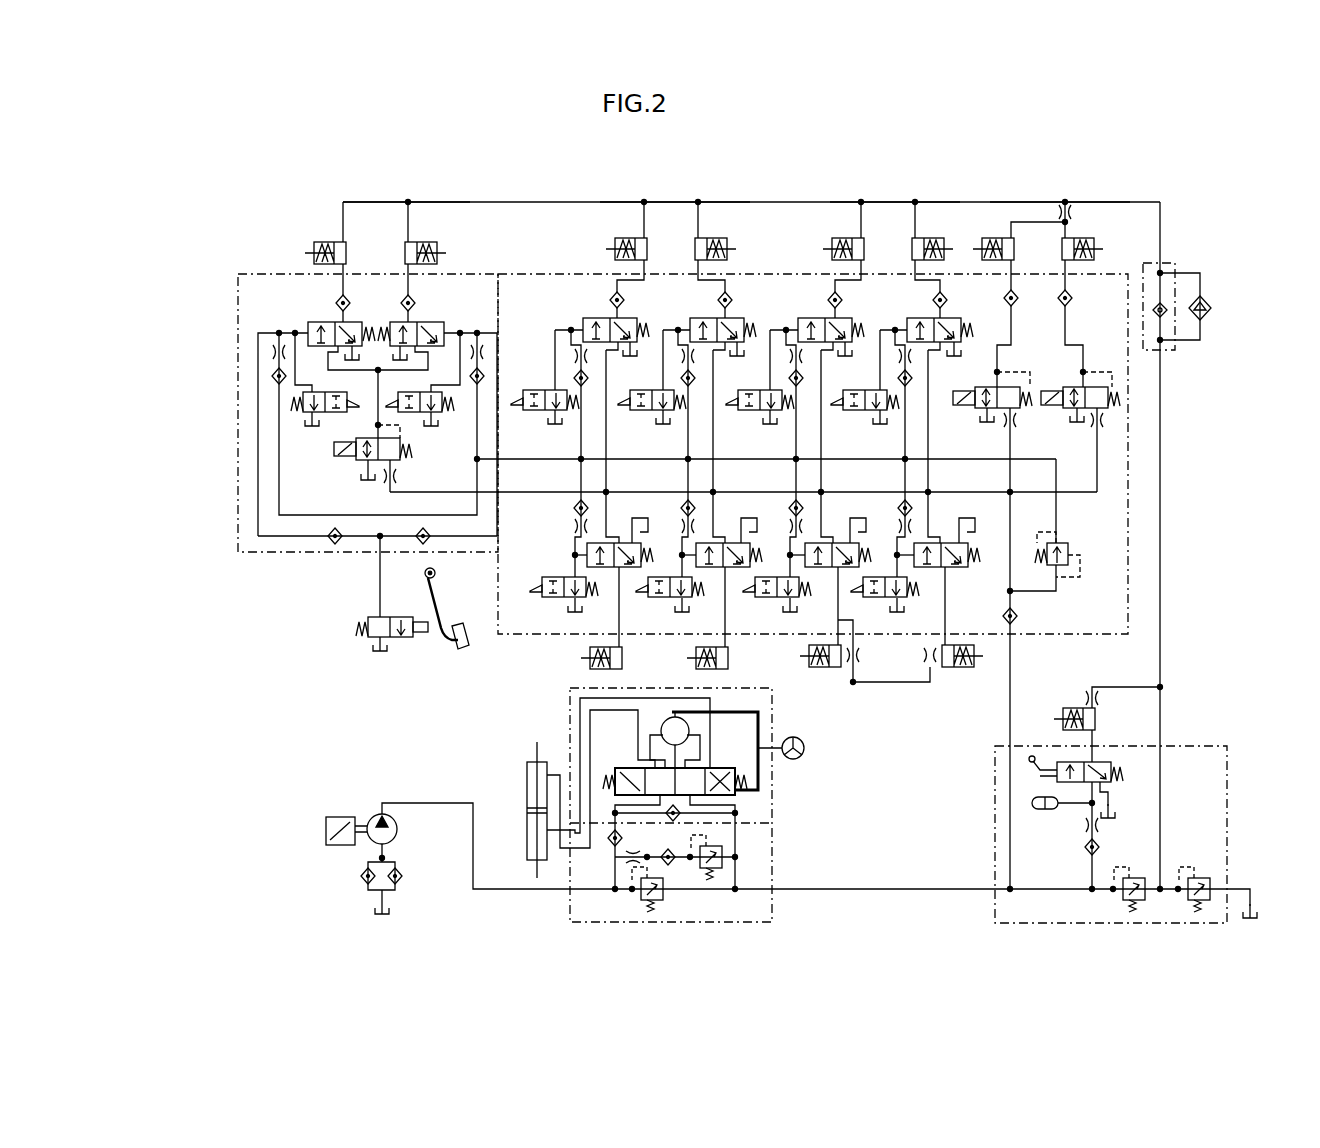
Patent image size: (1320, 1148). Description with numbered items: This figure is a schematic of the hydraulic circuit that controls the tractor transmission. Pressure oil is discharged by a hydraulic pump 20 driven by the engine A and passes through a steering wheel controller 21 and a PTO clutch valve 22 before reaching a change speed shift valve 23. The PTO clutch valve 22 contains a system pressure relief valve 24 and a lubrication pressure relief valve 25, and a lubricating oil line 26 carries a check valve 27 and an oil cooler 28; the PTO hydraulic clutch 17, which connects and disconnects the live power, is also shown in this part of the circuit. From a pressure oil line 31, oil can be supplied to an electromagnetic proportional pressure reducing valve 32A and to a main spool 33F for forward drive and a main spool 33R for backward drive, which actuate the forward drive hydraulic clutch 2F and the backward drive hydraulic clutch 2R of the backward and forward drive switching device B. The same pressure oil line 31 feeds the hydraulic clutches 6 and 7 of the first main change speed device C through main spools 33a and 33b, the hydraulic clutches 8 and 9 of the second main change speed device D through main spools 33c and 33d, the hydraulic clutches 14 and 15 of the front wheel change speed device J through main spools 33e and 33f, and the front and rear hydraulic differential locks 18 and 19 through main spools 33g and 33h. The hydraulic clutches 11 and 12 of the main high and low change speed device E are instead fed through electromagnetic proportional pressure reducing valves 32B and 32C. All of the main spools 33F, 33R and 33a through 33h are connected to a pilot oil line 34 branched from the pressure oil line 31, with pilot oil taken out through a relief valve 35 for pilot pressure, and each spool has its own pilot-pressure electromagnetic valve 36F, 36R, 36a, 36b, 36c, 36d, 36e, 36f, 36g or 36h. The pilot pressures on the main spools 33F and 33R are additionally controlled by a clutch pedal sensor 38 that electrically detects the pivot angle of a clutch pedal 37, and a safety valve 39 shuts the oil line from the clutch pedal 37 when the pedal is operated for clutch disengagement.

The forward drive hydraulic clutch 2F is at (328, 238).
The backward drive hydraulic clutch 2R is at (420, 238).
The hydraulic clutch 6 is at (626, 236).
The hydraulic clutch 7 is at (712, 236).
The hydraulic clutch 8 is at (845, 236).
The hydraulic clutch 9 is at (928, 236).
The hydraulic clutch 11 is at (1078, 236).
The hydraulic clutch 12 is at (1003, 236).
The hydraulic clutch 14 is at (826, 668).
The hydraulic clutch 15 is at (958, 668).
The hydraulic clutch 17 is at (1068, 706).
The hydraulic differential lock 18 is at (590, 658).
The hydraulic differential lock 19 is at (740, 656).
The hydraulic pump 20 is at (366, 820).
The steering wheel controller 21 is at (600, 924).
The PTO clutch valve 22 is at (1230, 782).
The change speed shift valve 23 is at (234, 300).
The system pressure relief valve 24 is at (1124, 902).
The lubrication pressure relief valve 25 is at (1208, 902).
The lubricating oil line 26 is at (1162, 668).
The check valve 27 is at (1175, 262).
The oil cooler 28 is at (1210, 300).
The pressure oil line 31 is at (1011, 708).
The electromagnetic proportional pressure reducing valve 32A is at (360, 460).
The electromagnetic proportional pressure reducing valve 32B is at (1095, 385).
The electromagnetic proportional pressure reducing valve 32C is at (1018, 372).
The main spool for forward drive 33F is at (306, 320).
The main spool for backward drive 33R is at (450, 322).
The main spool 33a is at (580, 318).
The main spool 33b is at (746, 320).
The main spool 33c is at (856, 320).
The main spool 33d is at (963, 318).
The main spool 33e is at (836, 541).
The main spool 33f is at (946, 541).
The main spool 33g is at (612, 541).
The main spool 33h is at (727, 541).
The pilot oil line 34 is at (1058, 508).
The relief valve for pilot pressure 35 is at (1072, 544).
The electromagnetic valve 36F is at (300, 412).
The electromagnetic valve 36R is at (432, 428).
The electromagnetic valve 36a is at (523, 380).
The electromagnetic valve 36b is at (646, 412).
The electromagnetic valve 36c is at (756, 412).
The electromagnetic valve 36d is at (864, 412).
The electromagnetic valve 36e is at (778, 600).
The electromagnetic valve 36f is at (882, 600).
The electromagnetic valve 36g is at (562, 600).
The electromagnetic valve 36h is at (672, 600).
The clutch pedal 37 is at (440, 650).
The clutch pedal sensor 38 is at (438, 573).
The safety valve 39 is at (364, 630).
The engine A is at (334, 832).
The backward and forward drive switching device B is at (374, 190).
The first main change speed device C is at (660, 190).
The second main change speed device D is at (880, 190).
The main high and low change speed device E is at (1040, 185).
The front wheel change speed device J is at (885, 740).